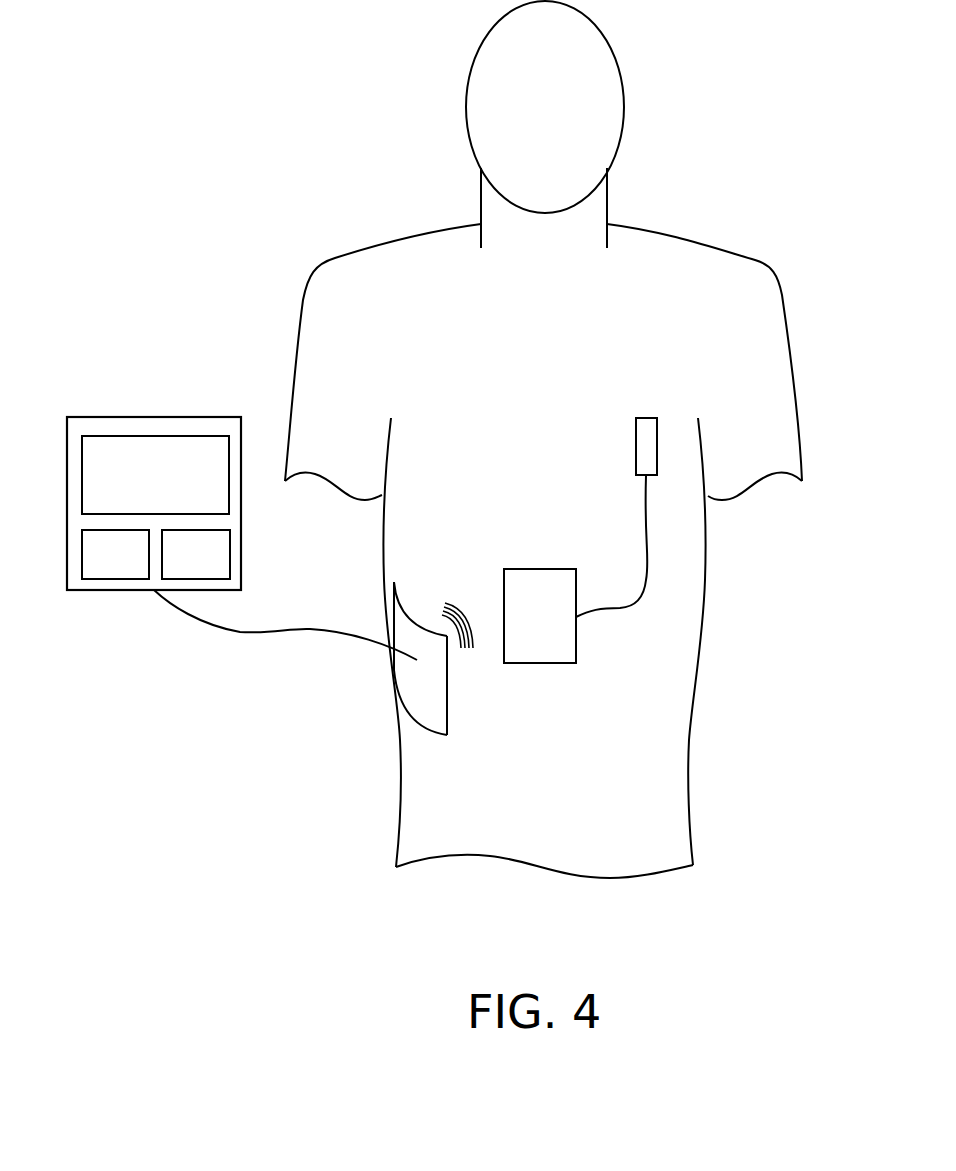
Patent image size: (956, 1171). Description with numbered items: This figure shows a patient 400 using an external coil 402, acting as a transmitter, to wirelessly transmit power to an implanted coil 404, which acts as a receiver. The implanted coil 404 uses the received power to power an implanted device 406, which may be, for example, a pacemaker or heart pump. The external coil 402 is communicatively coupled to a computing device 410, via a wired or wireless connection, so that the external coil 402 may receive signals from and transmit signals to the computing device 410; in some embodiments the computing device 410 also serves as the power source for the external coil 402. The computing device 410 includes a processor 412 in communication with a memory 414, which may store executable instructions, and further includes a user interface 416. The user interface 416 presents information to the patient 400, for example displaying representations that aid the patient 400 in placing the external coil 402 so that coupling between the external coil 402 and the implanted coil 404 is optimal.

The patient 400 is at (340, 82).
The external coil 402 is at (418, 693).
The implanted coil 404 is at (557, 663).
The implanted device 406 is at (657, 454).
The computing device 410 is at (242, 499).
The processor 412 is at (92, 570).
The memory 414 is at (172, 570).
The user interface 416 is at (132, 488).